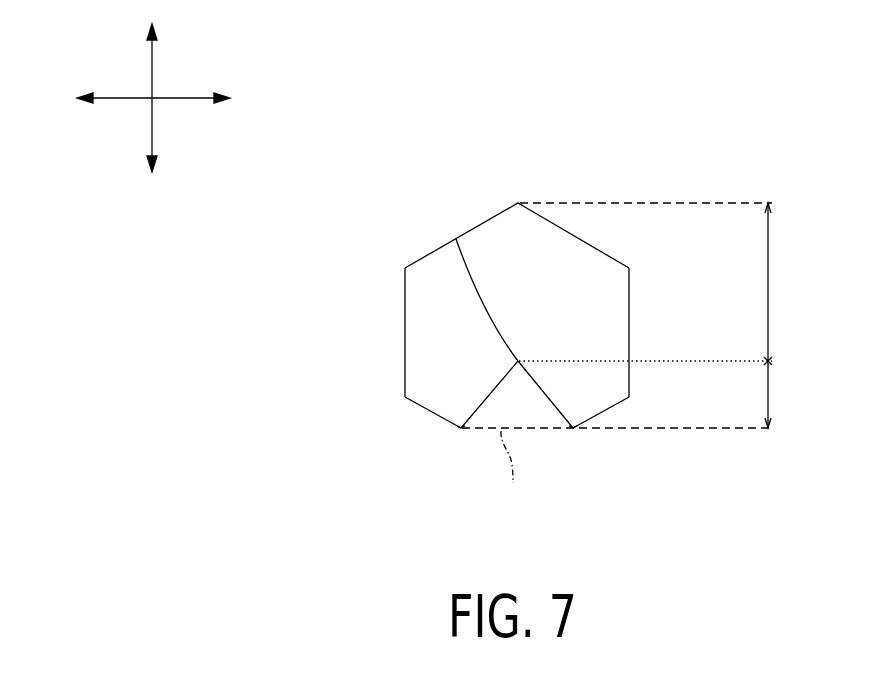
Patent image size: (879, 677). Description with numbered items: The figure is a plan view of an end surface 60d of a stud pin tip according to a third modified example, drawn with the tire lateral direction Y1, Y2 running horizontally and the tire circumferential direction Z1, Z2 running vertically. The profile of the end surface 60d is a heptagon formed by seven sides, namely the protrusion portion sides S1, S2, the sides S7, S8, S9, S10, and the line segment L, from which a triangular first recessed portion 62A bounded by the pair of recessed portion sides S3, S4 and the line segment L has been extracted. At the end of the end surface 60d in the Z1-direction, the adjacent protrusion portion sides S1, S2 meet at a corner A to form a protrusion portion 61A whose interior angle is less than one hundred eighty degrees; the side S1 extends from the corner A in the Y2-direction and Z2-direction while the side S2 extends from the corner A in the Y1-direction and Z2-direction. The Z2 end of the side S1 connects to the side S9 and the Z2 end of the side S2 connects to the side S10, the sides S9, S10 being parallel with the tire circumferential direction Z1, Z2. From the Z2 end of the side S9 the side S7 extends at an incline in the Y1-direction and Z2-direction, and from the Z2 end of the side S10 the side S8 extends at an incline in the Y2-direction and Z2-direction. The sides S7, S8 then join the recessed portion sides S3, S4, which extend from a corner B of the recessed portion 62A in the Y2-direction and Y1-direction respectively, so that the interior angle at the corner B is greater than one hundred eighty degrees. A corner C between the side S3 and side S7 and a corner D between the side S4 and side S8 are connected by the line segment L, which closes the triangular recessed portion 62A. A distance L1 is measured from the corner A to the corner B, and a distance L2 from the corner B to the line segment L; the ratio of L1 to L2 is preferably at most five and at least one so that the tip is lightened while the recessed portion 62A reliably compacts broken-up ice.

The end surface 60d is at (635, 133).
The protrusion portion 61A is at (528, 181).
The recessed portion 62A is at (521, 428).
The protrusion portion side S1 is at (438, 249).
The protrusion portion side S2 is at (608, 255).
The recessed portion side S3 is at (488, 398).
The recessed portion side S4 is at (549, 399).
The side S7 is at (442, 418).
The side S8 is at (598, 414).
The side S9 is at (405, 331).
The side S10 is at (629, 340).
The corner A is at (518, 203).
The corner B is at (456, 240).
The corner C is at (461, 429).
The corner D is at (573, 429).
The line segment L is at (507, 468).
The distance L1 is at (784, 284).
The distance L2 is at (786, 394).
The tire circumferential direction Z1 is at (152, 49).
The tire circumferential direction Z2 is at (159, 148).
The tire lateral direction Y1 is at (207, 98).
The tire lateral direction Y2 is at (97, 98).